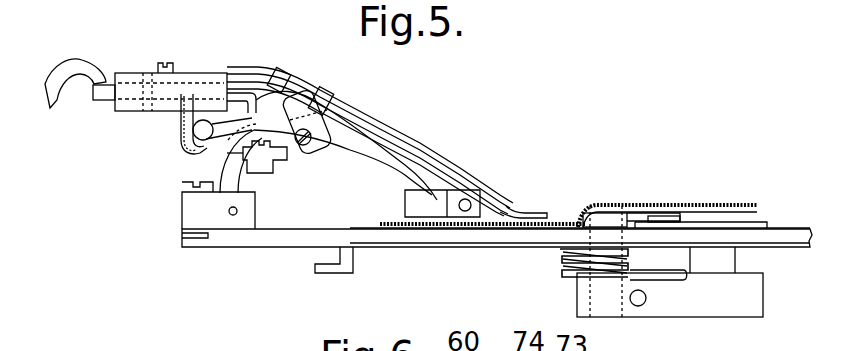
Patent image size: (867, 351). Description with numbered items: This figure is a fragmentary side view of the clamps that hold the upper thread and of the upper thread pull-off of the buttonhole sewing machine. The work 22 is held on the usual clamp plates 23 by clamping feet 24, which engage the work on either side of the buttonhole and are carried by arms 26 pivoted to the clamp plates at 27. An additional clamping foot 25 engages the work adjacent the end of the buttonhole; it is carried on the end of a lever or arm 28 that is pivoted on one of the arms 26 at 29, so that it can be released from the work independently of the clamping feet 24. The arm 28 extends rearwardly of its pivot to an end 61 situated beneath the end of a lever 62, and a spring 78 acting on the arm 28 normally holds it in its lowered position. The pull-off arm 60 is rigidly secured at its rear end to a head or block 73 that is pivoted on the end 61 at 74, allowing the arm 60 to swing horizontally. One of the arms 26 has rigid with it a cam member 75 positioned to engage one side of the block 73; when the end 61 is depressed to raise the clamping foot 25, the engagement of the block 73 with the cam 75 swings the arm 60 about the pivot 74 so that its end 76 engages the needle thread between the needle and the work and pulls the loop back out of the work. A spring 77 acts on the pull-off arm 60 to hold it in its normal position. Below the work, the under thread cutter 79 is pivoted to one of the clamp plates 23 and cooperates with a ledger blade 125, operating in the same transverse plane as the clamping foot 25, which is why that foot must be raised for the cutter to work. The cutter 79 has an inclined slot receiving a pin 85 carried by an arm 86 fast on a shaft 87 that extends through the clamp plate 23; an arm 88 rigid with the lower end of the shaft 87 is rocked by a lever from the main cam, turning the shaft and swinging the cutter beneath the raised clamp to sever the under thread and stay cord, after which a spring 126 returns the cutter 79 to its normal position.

The work 22 is at (609, 203).
The clamp plates 23 is at (498, 243).
The clamping feet 24 is at (486, 222).
The auxiliary clamping foot 25 is at (546, 224).
The arms 26 is at (378, 165).
The pivot 27 is at (233, 216).
The lever or arm 28 is at (410, 150).
The pivot 29 is at (305, 148).
The pull-off arm 60 is at (461, 168).
The rear end of arm 28 61 is at (106, 98).
The lever 62 is at (50, 80).
The head or block 73 is at (200, 76).
The pivot 74 is at (145, 82).
The cam member 75 is at (186, 113).
The end of pull-off arm 76 is at (536, 212).
The spring 77 is at (303, 96).
The spring 78 is at (197, 150).
The under thread cutter 79 is at (749, 220).
The pin 85 is at (662, 217).
The arm 86 is at (640, 210).
The shaft 87 is at (600, 276).
The arm 88 is at (703, 300).
The ledger blade 125 is at (549, 232).
The spring 126 is at (661, 268).